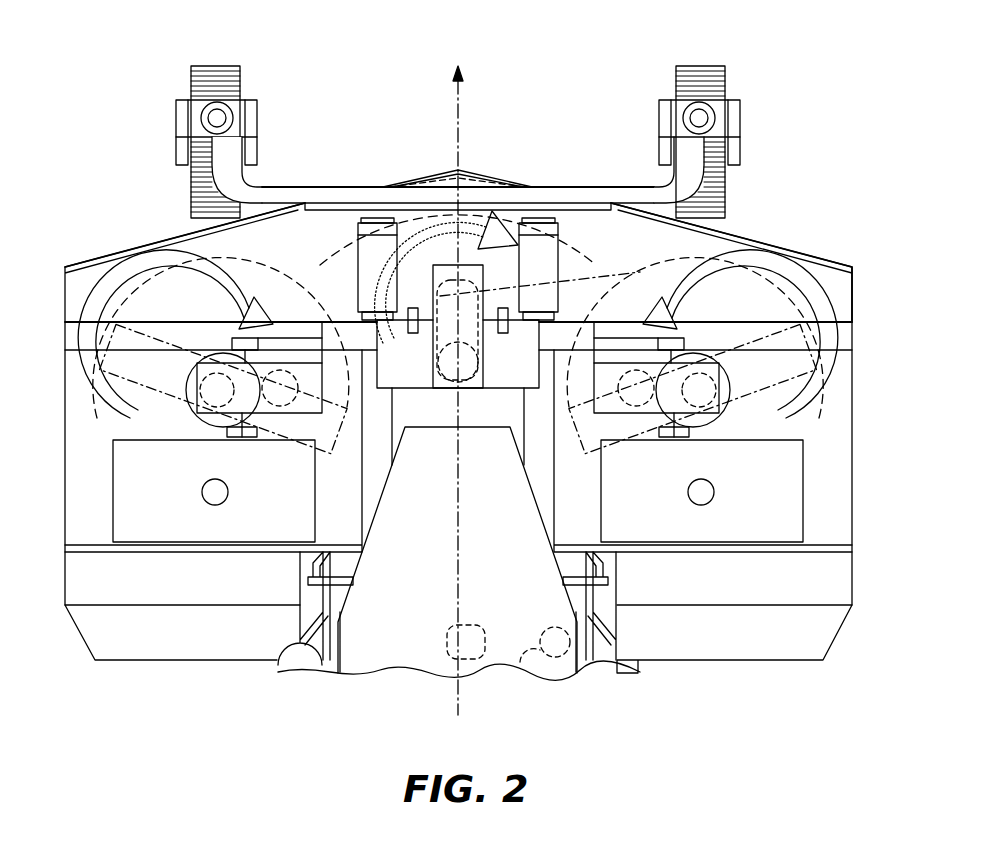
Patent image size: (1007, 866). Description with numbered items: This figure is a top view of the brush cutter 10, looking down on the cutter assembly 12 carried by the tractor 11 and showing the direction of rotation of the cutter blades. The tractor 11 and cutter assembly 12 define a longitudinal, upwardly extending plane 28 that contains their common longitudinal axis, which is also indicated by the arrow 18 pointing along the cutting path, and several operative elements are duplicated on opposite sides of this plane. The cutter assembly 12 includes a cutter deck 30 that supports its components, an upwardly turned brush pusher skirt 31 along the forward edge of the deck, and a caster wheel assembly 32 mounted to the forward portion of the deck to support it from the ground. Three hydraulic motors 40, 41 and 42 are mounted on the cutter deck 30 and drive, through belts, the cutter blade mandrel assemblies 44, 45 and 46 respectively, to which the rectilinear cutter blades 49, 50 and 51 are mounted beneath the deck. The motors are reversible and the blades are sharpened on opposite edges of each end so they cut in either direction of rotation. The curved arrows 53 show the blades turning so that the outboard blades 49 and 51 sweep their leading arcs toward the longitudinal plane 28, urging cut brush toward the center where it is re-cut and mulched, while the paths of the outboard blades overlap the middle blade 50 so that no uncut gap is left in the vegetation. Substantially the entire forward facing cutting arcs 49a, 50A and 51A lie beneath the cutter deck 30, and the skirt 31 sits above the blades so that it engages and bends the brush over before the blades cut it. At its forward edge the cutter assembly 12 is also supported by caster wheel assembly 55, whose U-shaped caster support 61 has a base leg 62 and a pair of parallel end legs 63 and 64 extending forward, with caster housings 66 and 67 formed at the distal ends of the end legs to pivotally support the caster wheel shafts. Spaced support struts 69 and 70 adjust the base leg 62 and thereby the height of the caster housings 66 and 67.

The brush cutter 10 is at (803, 157).
The tractor 11 is at (340, 674).
The cutter assembly 12 is at (855, 293).
The arrow 18 is at (460, 125).
The longitudinal plane 28 is at (458, 704).
The cutter deck 30 is at (833, 418).
The brush pusher skirt 31 is at (793, 252).
The caster wheel assembly 32 is at (728, 74).
The hydraulic motor 40 is at (322, 397).
The hydraulic motor 41 is at (412, 426).
The hydraulic motor 42 is at (641, 387).
The cutter blade mandrel assembly 44 is at (207, 423).
The cutter blade mandrel assembly 45 is at (482, 267).
The cutter blade mandrel assembly 46 is at (752, 390).
The rectilinear cutter blade 49 is at (97, 334).
The forward facing cutting arc 49a is at (185, 235).
The rectilinear cutter blade 50 is at (508, 426).
The forward facing cutting arc 50A is at (568, 245).
The rectilinear cutter blade 51 is at (836, 455).
The forward facing cutting arc 51A is at (830, 295).
The rotation arrow 53 is at (458, 314).
The caster wheel assembly 55 is at (255, 101).
The U-shaped caster support 61 is at (567, 195).
The base leg 62 is at (339, 198).
The end leg 63 is at (220, 148).
The end leg 64 is at (700, 150).
The caster housing 66 is at (207, 118).
The caster housing 67 is at (709, 118).
The support strut 69 is at (365, 275).
The support strut 70 is at (548, 300).